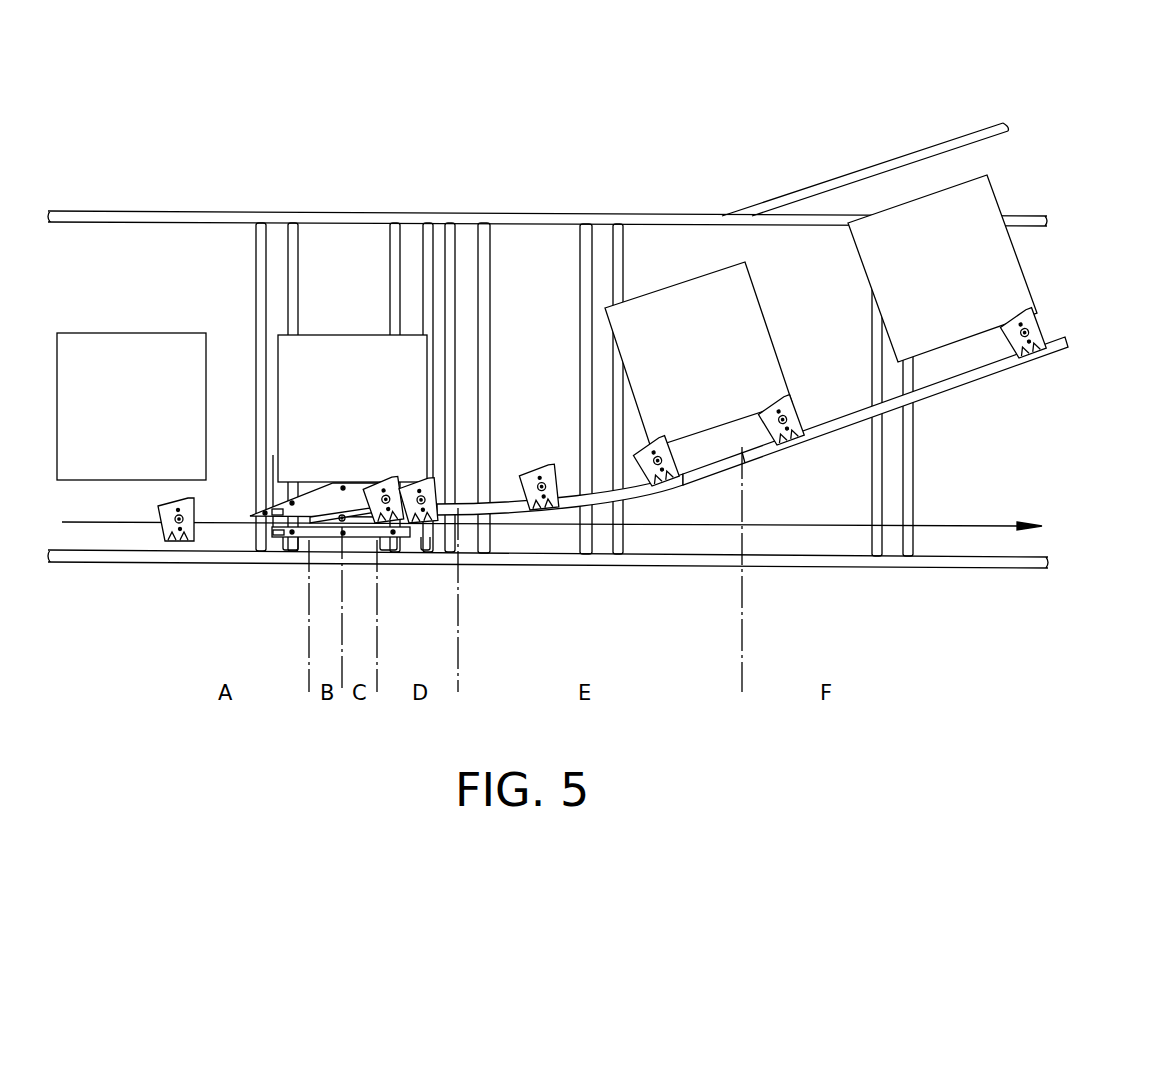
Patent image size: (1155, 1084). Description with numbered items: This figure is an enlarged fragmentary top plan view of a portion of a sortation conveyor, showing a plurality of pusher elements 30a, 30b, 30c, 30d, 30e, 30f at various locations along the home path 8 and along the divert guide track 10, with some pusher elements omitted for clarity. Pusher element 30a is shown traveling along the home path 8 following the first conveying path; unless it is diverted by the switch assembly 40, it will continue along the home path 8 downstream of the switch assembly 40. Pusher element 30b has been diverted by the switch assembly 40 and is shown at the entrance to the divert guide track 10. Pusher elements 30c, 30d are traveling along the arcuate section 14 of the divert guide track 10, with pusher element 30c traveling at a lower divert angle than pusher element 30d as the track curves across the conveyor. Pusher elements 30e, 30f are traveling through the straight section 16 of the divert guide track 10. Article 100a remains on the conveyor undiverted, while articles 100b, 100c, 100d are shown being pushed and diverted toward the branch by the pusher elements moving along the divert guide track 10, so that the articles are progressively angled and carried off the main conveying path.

The home path 8 is at (1017, 524).
The divert guide track 10 is at (752, 426).
The arcuate section 14 is at (508, 490).
The straight section 16 is at (860, 410).
The pusher element 30a is at (158, 519).
The pusher element 30b is at (438, 537).
The pusher element 30c is at (525, 478).
The pusher element 30d is at (672, 483).
The pusher element 30e is at (793, 445).
The pusher element 30f is at (1045, 358).
The switch assembly 40 is at (322, 498).
The article 100a is at (168, 332).
The article 100b is at (308, 333).
The article 100c is at (728, 368).
The article 100d is at (968, 283).